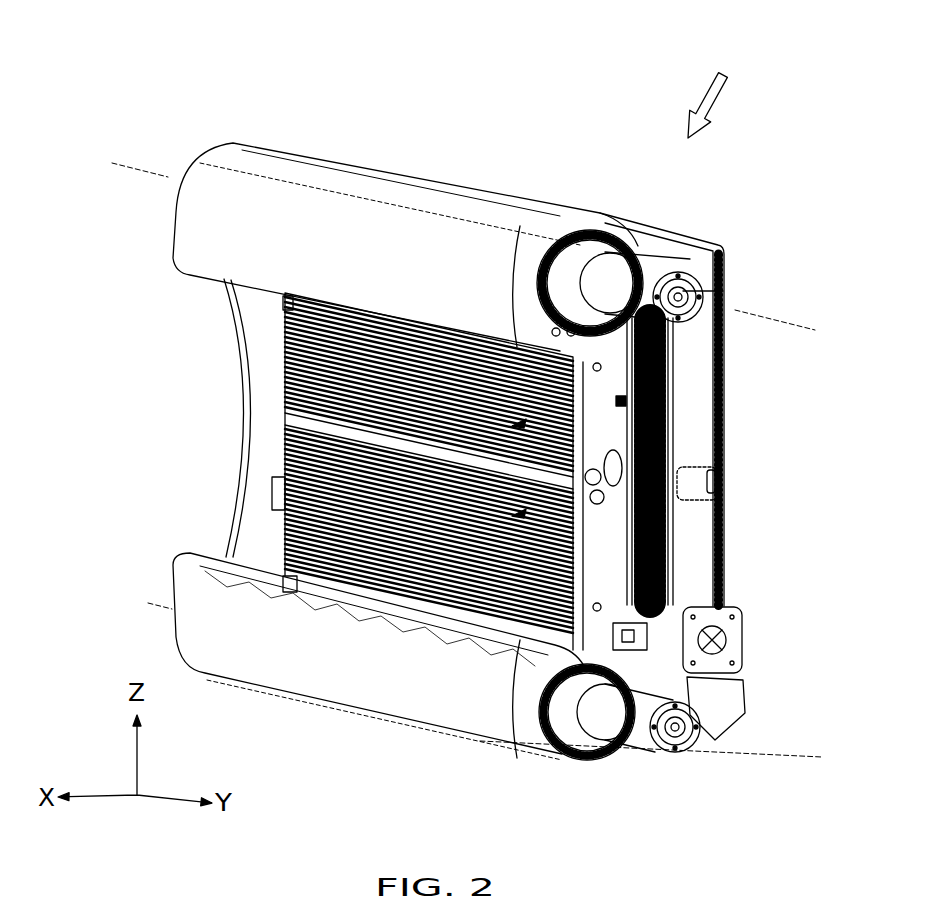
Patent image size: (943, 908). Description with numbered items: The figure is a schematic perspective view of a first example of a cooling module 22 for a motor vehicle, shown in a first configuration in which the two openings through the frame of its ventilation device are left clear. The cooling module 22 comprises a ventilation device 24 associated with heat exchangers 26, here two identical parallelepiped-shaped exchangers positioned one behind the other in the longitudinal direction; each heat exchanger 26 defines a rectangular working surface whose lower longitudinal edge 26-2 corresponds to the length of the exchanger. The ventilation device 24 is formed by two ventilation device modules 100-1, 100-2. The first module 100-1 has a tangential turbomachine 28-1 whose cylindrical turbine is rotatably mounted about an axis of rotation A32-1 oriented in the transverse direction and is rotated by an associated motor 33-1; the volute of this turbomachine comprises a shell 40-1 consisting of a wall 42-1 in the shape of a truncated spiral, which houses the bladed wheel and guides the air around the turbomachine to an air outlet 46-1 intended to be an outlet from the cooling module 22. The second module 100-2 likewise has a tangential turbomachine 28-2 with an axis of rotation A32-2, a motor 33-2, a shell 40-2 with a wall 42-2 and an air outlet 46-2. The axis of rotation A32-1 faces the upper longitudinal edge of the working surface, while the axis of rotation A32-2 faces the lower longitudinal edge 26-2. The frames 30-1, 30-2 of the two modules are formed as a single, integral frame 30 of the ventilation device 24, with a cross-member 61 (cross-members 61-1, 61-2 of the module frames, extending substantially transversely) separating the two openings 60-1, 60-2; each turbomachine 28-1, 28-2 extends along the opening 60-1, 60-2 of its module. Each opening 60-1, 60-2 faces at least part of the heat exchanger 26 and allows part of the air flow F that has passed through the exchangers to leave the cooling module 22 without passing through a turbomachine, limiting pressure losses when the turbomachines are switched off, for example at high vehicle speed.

The cooling module 22 is at (153, 70).
The ventilation device 24 is at (119, 291).
The heat exchanger 26 is at (427, 471).
The lower longitudinal edge 26-2 is at (717, 752).
The tangential turbomachine 28-1 is at (476, 205).
The tangential turbomachine 28-2 is at (494, 704).
The frame 30 is at (716, 495).
The frame 30-1 is at (600, 418).
The frame 30-2 is at (600, 577).
The motor 33-1 is at (708, 262).
The motor 33-2 is at (682, 752).
The shell 40-1 is at (285, 175).
The shell 40-2 is at (428, 697).
The wall 42-1 is at (200, 210).
The wall 42-2 is at (237, 660).
The air outlet 46-1 is at (327, 308).
The air outlet 46-2 is at (288, 583).
The opening 60-1 is at (573, 443).
The opening 60-2 is at (565, 533).
The cross-member 61 is at (304, 433).
The cross-member 61-1 is at (429, 445).
The cross-member 61-2 is at (283, 418).
The ventilation device module 100-1 is at (137, 332).
The ventilation device module 100-2 is at (137, 479).
The axis of rotation A32-1 is at (800, 288).
The axis of rotation A32-2 is at (800, 726).
The air flow F is at (717, 110).